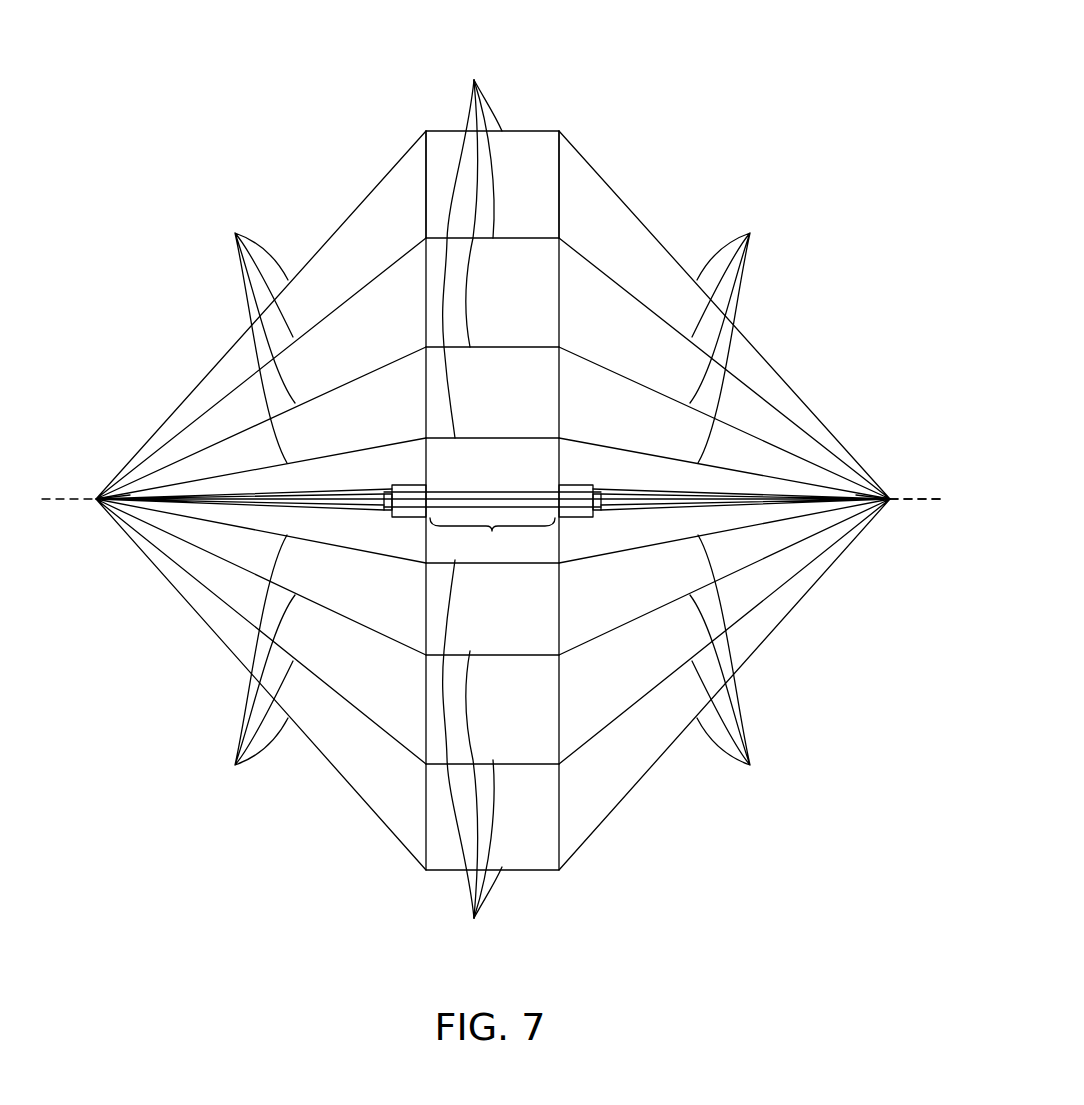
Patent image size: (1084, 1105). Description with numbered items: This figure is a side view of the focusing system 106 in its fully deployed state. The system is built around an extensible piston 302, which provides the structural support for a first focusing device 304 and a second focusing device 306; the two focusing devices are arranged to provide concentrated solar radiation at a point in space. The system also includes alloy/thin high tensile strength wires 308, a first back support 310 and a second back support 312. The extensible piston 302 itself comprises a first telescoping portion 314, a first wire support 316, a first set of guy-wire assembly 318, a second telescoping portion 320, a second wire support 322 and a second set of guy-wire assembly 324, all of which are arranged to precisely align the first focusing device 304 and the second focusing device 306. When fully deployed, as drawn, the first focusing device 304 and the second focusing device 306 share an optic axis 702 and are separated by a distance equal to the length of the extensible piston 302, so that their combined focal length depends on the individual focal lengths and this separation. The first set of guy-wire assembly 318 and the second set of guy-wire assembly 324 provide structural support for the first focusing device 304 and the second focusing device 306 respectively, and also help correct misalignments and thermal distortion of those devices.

The focusing system 106 is at (258, 125).
The extensible piston 302 is at (470, 490).
The first focusing device 304 is at (425, 200).
The second focusing device 306 is at (560, 200).
The alloy/thin high tensile strength wires 308 is at (472, 502).
The first back support 310 is at (400, 517).
The second back support 312 is at (580, 517).
The first telescoping portion 314 is at (272, 488).
The first wire support 316 is at (96, 505).
The first set of guy-wire assembly 318 is at (239, 502).
The second telescoping portion 320 is at (720, 490).
The second wire support 322 is at (897, 504).
The second set of guy-wire assembly 324 is at (746, 502).
The optic axis 702 is at (925, 488).